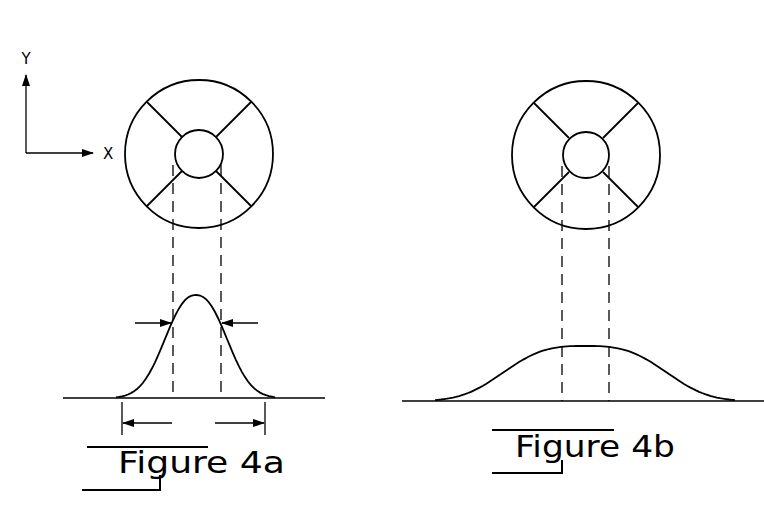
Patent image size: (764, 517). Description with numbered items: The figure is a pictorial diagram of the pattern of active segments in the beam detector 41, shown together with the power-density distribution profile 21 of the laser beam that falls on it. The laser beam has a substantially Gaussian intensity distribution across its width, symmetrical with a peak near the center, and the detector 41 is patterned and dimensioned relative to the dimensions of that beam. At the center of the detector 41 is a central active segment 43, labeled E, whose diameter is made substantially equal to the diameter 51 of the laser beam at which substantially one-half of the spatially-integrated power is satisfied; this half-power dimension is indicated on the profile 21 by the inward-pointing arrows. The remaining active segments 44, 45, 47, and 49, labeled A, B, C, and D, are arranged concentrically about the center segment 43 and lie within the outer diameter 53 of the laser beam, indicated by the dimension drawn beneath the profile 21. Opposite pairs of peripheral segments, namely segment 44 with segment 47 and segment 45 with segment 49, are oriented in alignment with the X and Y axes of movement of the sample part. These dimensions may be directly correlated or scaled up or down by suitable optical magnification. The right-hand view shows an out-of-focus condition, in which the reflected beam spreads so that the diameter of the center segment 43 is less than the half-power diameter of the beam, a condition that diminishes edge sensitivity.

In FIG. 4A, the power-density distribution profile 21 is at (247, 384).
In FIG. 4A, the detector 41 is at (200, 137).
In FIG. 4B, the detector 41 is at (573, 55).
In FIG. 4A, the central active segment E 43 is at (213, 146).
In FIG. 4A, the active segment A 44 is at (224, 92).
In FIG. 4A, the active segment B 45 is at (262, 165).
In FIG. 4A, the active segment C 47 is at (162, 205).
In FIG. 4A, the active segment D 49 is at (141, 122).
In FIG. 4A, the half-power diameter of the laser beam 51 is at (233, 323).
In FIG. 4A, the outer diameter of the laser beam 53 is at (193, 419).